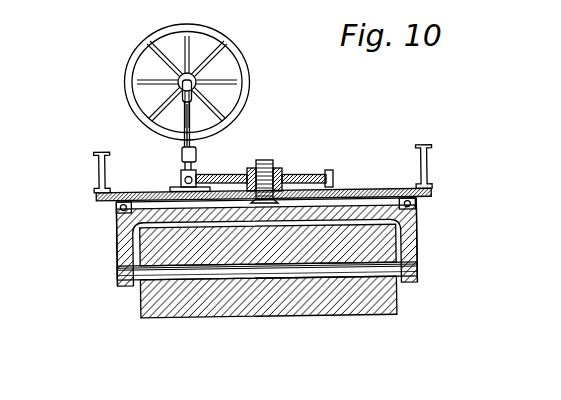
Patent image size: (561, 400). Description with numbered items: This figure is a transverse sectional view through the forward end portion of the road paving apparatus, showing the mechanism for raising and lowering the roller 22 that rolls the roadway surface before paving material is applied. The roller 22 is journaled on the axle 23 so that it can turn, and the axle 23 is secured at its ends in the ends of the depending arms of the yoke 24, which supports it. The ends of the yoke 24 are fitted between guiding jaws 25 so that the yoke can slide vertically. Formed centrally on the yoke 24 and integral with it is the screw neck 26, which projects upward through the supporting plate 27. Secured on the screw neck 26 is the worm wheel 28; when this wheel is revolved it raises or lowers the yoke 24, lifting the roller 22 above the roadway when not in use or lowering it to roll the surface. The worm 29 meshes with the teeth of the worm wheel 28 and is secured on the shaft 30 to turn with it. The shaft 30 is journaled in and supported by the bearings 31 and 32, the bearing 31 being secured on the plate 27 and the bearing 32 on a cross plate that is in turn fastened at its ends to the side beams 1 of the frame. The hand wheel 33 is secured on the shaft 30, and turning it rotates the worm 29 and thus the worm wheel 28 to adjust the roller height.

The side beams 1 is at (99, 176).
The roller 22 is at (358, 295).
The axle 23 is at (417, 275).
The yoke 24 is at (418, 235).
The guiding jaws 25 is at (116, 208).
The screw neck 26 is at (268, 160).
The supporting plate 27 is at (433, 192).
The worm wheel 28 is at (330, 176).
The worm 29 is at (183, 178).
The shaft 30 is at (192, 138).
The bearing 31 is at (197, 154).
The bearing 32 is at (192, 104).
The hand wheel 33 is at (243, 75).